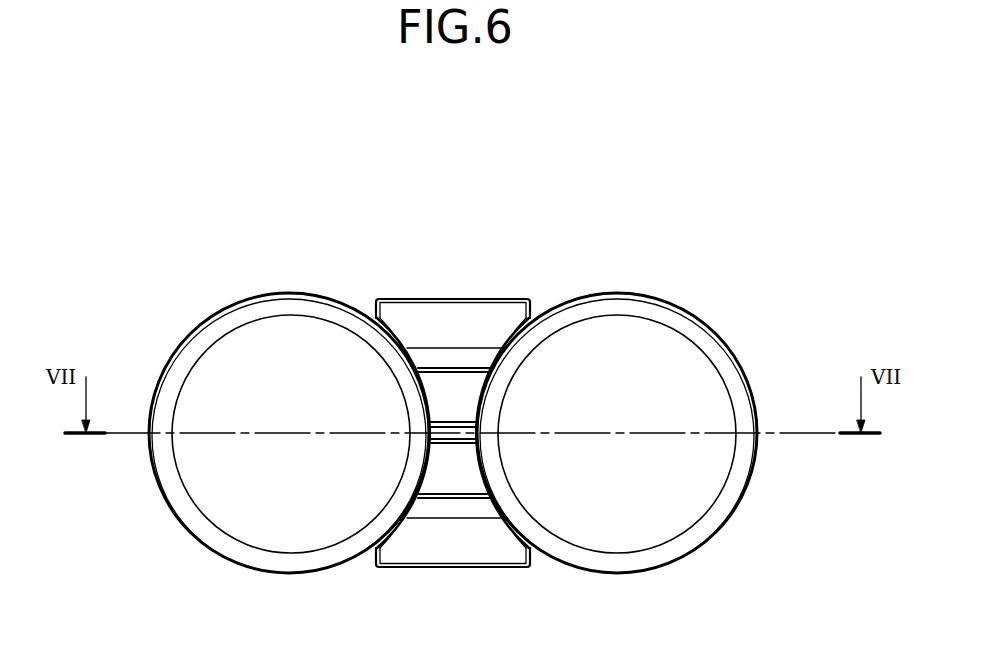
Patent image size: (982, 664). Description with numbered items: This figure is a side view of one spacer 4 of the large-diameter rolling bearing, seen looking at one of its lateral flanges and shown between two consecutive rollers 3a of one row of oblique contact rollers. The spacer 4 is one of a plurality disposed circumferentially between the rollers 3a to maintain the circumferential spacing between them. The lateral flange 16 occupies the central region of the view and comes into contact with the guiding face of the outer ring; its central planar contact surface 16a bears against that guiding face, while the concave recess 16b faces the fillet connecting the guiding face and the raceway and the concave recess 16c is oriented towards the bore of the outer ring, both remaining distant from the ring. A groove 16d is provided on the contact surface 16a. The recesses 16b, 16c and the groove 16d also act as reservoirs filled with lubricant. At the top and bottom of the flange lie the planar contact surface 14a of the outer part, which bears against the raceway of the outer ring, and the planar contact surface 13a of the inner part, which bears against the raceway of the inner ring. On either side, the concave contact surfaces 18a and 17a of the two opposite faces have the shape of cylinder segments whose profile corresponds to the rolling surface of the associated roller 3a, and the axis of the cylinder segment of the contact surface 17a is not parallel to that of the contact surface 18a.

The rollers 3a is at (153, 474).
The spacer 4 is at (453, 434).
The lateral flange 16 is at (453, 434).
The contact surface 16a is at (448, 470).
The recess 16b is at (467, 315).
The recess 16c is at (468, 567).
The groove 16d is at (453, 432).
The planar contact surface 13a is at (413, 570).
The planar contact surface 14a is at (413, 297).
The concave contact surface 17a is at (483, 398).
The concave contact surface 18a is at (420, 397).